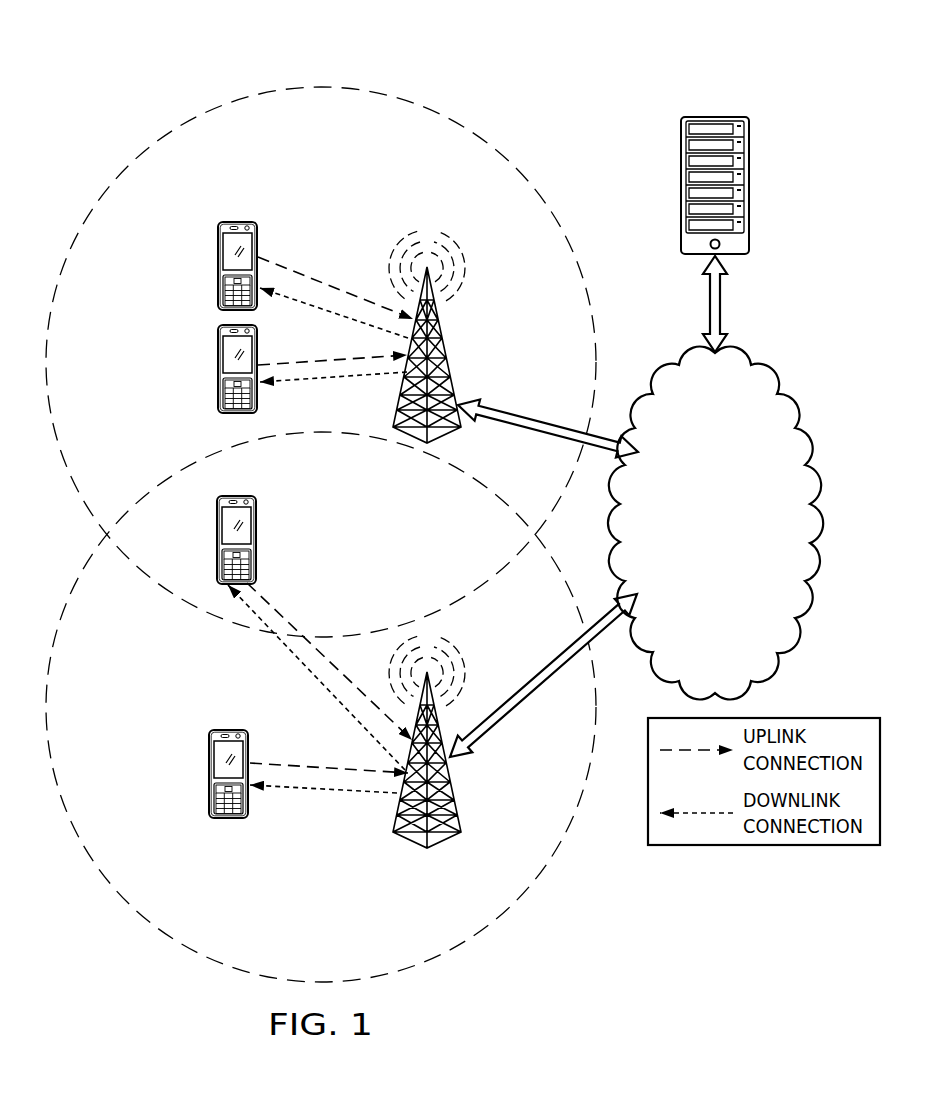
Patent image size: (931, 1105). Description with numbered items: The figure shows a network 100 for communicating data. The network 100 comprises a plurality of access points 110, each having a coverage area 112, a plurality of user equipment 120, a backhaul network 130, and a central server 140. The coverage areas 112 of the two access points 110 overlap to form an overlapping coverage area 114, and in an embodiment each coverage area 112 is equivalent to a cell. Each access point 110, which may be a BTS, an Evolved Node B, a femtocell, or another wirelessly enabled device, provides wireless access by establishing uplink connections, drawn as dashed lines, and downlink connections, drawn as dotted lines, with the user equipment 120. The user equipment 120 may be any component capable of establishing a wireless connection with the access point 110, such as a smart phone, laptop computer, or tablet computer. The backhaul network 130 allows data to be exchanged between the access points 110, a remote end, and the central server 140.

The network 100 is at (810, 69).
The access point 110 is at (453, 348).
The coverage area 112 is at (163, 133).
The overlapping coverage area 114 is at (343, 553).
The user equipment 120 is at (217, 262).
The backhaul network 130 is at (736, 575).
The central server 140 is at (750, 185).